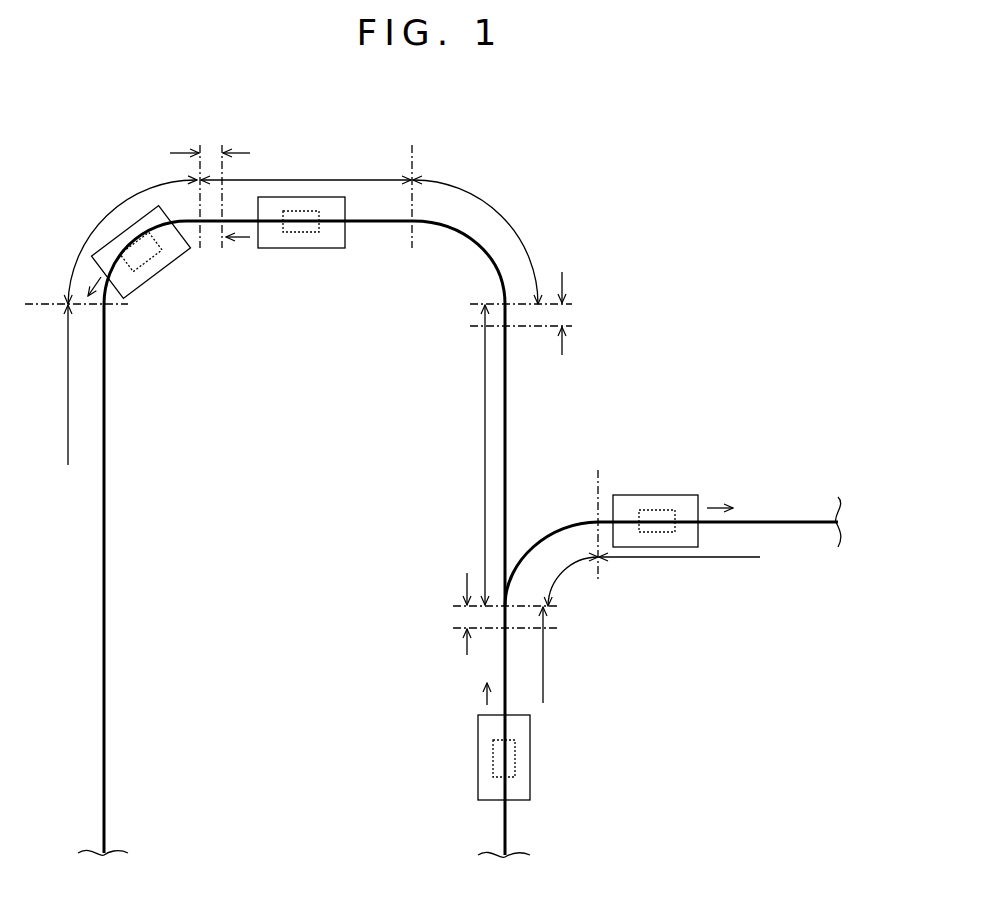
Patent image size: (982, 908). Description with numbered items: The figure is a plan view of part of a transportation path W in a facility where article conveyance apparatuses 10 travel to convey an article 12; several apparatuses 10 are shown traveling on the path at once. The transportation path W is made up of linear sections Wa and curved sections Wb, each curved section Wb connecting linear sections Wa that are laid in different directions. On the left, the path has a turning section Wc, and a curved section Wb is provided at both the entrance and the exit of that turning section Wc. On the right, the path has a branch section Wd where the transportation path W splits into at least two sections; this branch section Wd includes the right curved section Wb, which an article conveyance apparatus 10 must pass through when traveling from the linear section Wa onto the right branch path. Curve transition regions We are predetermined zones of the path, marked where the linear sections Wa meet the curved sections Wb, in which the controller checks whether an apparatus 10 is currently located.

The article conveyance apparatus 10 is at (153, 279).
The article 12 is at (503, 766).
The transportation path W is at (103, 695).
The linear section Wa is at (397, 424).
The curved section Wb is at (312, 393).
The turning section Wc is at (387, 265).
The branch section Wd is at (522, 523).
The curve transition region We is at (389, 383).